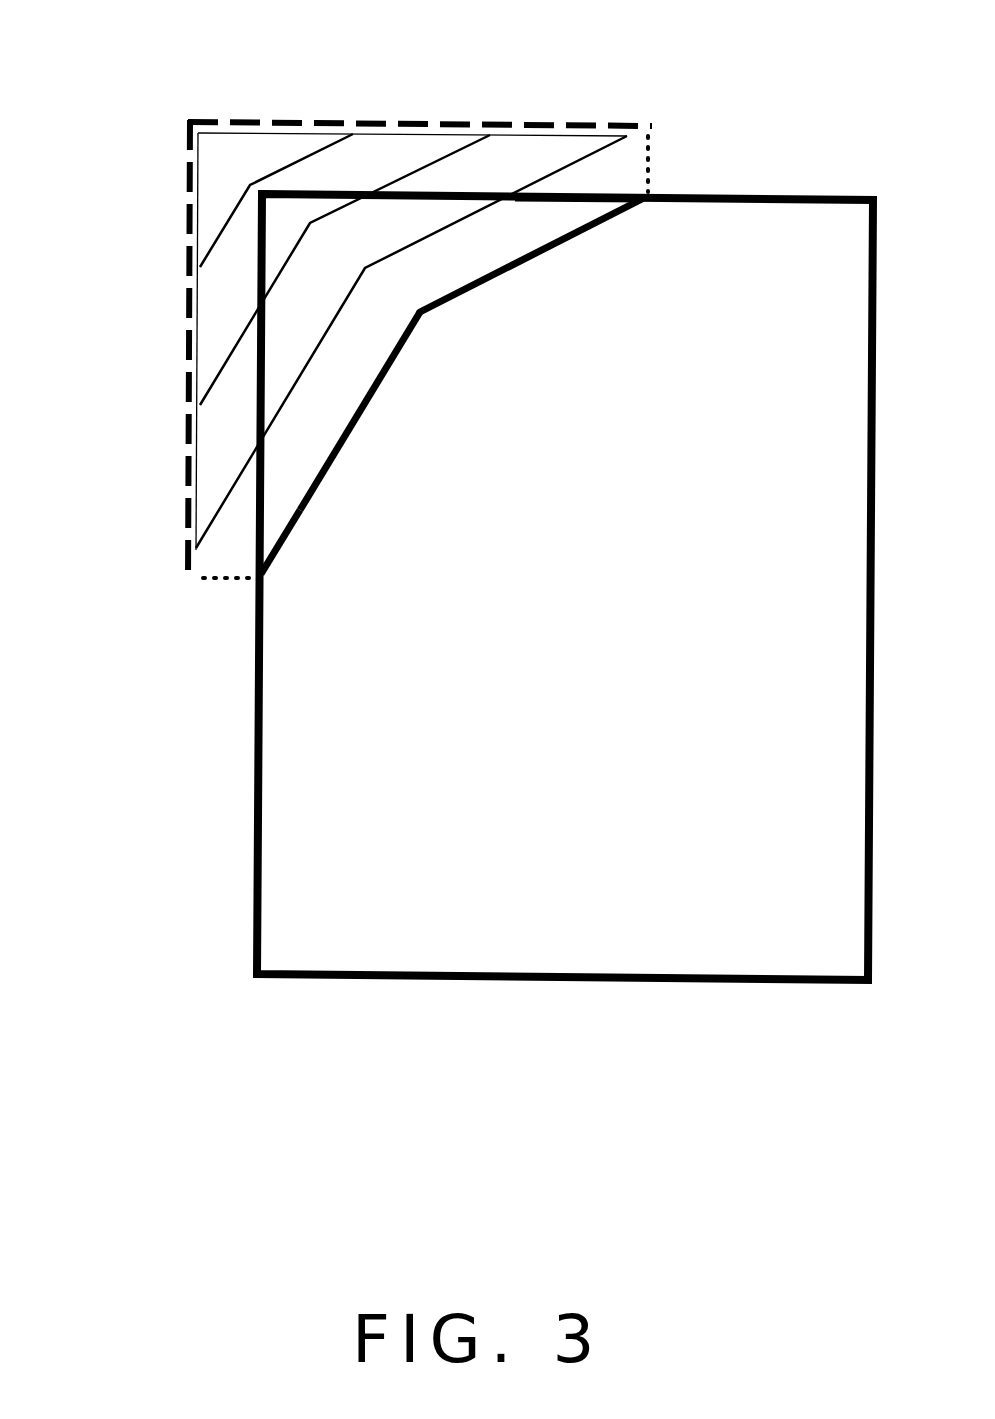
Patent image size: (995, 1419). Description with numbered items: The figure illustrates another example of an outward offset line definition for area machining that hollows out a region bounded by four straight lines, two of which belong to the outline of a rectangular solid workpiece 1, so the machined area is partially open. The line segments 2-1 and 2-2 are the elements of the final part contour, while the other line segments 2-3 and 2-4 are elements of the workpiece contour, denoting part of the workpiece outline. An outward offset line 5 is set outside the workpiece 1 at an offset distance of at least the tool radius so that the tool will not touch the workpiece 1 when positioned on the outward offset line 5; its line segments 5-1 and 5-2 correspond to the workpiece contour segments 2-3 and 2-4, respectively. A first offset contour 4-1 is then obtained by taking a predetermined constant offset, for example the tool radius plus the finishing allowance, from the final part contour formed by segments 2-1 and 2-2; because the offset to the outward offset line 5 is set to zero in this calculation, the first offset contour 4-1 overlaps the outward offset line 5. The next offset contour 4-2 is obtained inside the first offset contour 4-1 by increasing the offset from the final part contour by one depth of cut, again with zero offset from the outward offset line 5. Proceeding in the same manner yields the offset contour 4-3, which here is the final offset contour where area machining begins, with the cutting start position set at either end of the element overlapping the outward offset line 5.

The rectangular solid workpiece 1 is at (832, 215).
The line segment of the final part contour 2-1 is at (537, 256).
The line segment of the final part contour 2-2 is at (316, 495).
The line segment of the workpiece contour 2-3 is at (267, 514).
The line segment of the workpiece contour 2-4 is at (578, 202).
The first offset contour 4-1 is at (230, 488).
The next offset contour 4-2 is at (215, 384).
The final offset contour 4-3 is at (227, 222).
The outward offset line 5 is at (353, 291).
The line segment of the outward offset line 5-1 is at (423, 122).
The line segment of the outward offset line 5-2 is at (187, 327).